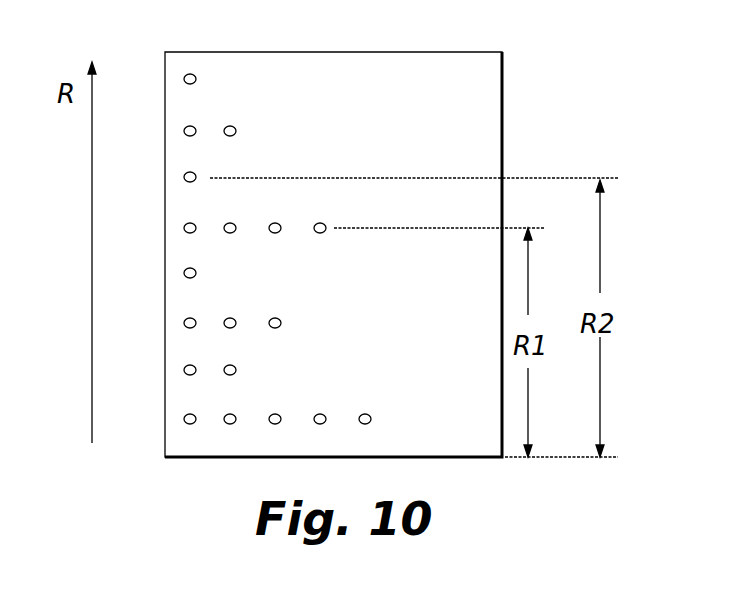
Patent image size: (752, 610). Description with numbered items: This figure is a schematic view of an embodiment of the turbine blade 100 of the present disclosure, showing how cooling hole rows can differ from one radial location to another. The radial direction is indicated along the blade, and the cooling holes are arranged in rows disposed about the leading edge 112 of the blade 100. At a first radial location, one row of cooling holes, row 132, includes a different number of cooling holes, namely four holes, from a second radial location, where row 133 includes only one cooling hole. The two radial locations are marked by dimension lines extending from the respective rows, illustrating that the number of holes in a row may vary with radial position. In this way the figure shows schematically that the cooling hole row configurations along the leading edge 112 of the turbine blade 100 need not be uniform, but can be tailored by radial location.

The turbine blade 100 is at (350, 51).
The leading edge 112 is at (165, 205).
The cooling hole row 133 is at (185, 172).
The cooling hole row 132 is at (322, 234).